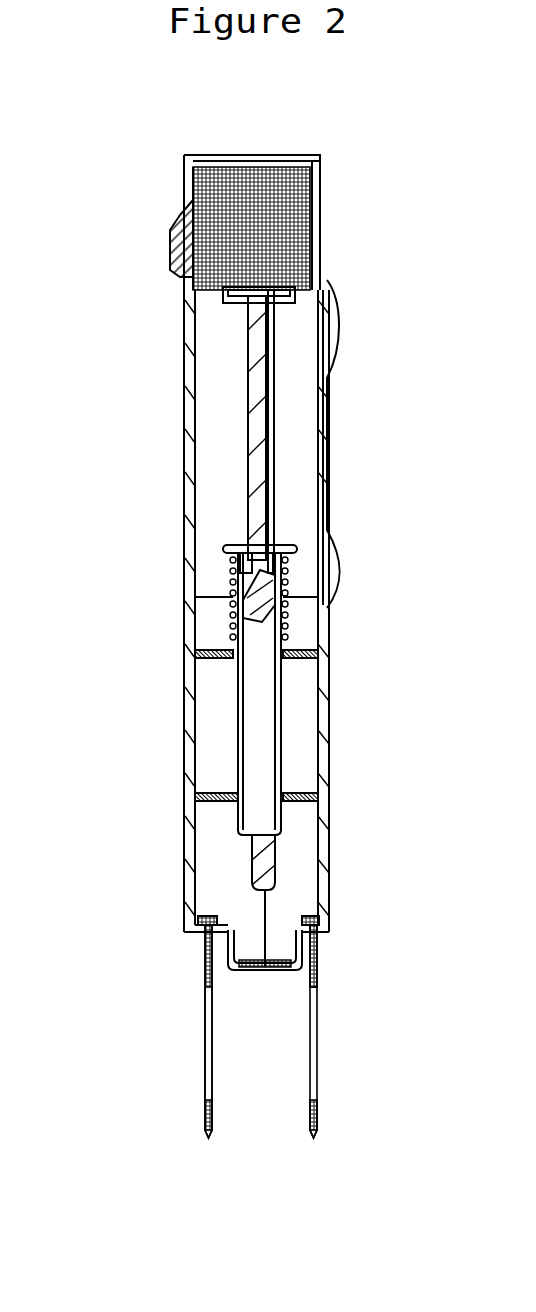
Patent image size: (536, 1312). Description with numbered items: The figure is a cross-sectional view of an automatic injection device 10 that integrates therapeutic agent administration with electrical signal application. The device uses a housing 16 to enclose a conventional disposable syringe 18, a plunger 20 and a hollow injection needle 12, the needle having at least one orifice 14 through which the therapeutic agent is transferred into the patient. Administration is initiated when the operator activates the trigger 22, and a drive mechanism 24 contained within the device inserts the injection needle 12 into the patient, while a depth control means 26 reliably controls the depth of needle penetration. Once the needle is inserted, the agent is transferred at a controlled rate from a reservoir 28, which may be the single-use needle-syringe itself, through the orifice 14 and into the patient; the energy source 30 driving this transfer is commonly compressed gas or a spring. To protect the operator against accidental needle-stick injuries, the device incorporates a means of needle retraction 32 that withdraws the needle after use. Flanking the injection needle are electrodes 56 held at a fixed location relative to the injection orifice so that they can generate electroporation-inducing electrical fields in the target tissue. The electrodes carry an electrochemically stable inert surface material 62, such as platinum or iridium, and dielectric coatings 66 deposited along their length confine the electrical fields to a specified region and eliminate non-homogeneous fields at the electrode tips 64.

The automatic injection device 10 is at (147, 422).
The injection needle 12 is at (260, 908).
The orifice 14 is at (265, 983).
The housing 16 is at (333, 640).
The syringe 18 is at (235, 698).
The plunger 20 is at (274, 419).
The trigger 22 is at (168, 243).
The drive mechanism 24 is at (260, 282).
The depth control means 26 is at (228, 948).
The reservoir 28 is at (262, 716).
The energy source 30 is at (257, 185).
The means of needle retraction 32 is at (232, 572).
The electrodes 56 is at (193, 1022).
The inert surface material 62 is at (205, 1048).
The electrode tips 64 is at (208, 1138).
The dielectric coatings 66 is at (320, 1110).